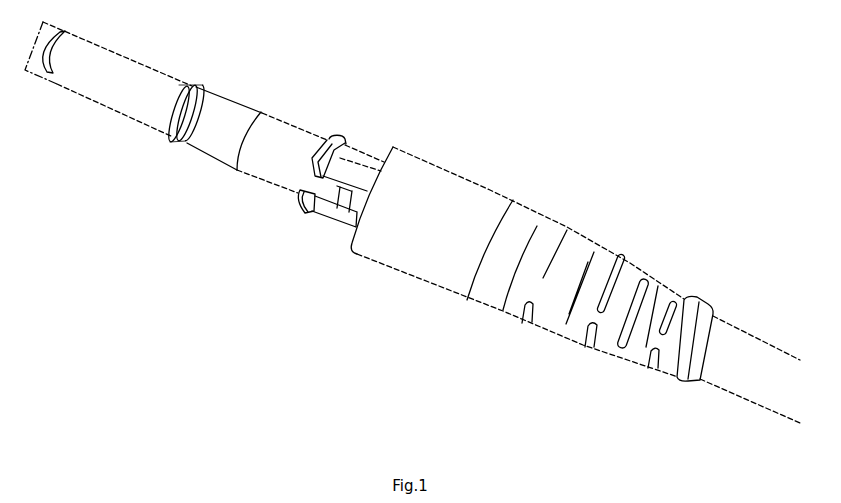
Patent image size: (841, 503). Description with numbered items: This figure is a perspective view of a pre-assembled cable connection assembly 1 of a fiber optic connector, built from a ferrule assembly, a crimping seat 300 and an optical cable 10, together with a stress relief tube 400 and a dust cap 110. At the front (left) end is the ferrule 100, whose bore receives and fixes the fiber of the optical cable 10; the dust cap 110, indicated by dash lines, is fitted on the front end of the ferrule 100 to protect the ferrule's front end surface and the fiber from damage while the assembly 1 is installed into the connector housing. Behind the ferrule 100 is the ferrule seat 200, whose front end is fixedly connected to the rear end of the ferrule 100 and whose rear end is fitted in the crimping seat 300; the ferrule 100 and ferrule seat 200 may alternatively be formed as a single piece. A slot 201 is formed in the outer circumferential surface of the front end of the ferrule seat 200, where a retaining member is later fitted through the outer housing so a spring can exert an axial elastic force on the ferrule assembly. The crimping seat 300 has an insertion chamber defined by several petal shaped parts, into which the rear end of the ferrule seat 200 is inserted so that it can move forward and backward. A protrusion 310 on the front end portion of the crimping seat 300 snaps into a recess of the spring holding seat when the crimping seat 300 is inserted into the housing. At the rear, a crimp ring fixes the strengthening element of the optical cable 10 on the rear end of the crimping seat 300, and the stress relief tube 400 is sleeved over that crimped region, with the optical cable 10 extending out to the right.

The cable connection assembly 1 is at (242, 248).
The optical cable 10 is at (737, 377).
The ferrule 100 is at (108, 84).
The dust cap 110 is at (70, 32).
The ferrule seat 200 is at (259, 143).
The slot 201 is at (184, 141).
The crimping seat 300 is at (330, 212).
The protrusion 310 is at (331, 139).
The stress relief tube 400 is at (470, 192).